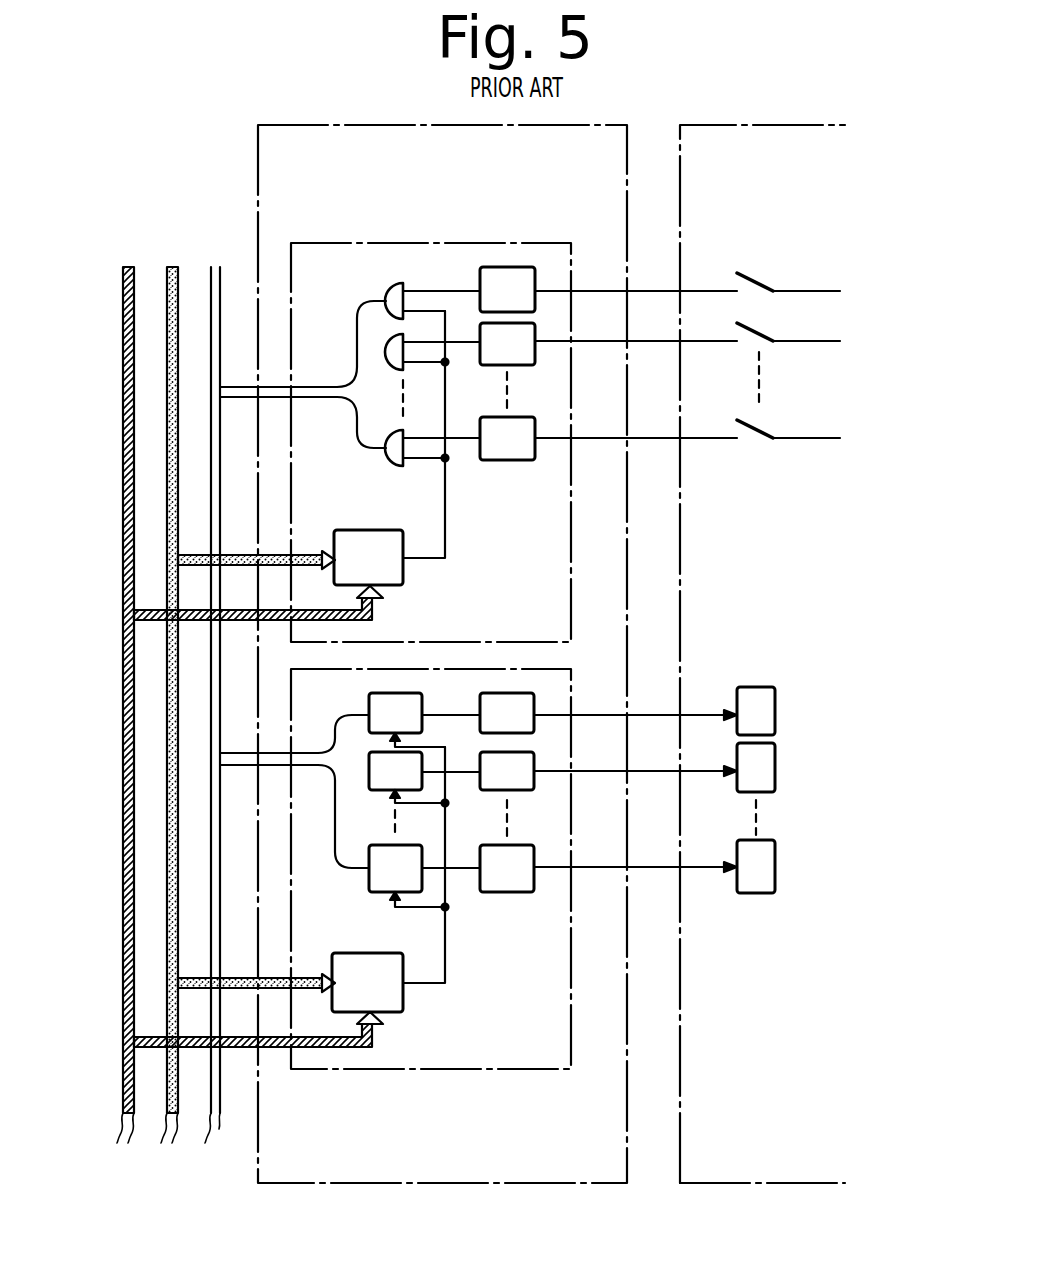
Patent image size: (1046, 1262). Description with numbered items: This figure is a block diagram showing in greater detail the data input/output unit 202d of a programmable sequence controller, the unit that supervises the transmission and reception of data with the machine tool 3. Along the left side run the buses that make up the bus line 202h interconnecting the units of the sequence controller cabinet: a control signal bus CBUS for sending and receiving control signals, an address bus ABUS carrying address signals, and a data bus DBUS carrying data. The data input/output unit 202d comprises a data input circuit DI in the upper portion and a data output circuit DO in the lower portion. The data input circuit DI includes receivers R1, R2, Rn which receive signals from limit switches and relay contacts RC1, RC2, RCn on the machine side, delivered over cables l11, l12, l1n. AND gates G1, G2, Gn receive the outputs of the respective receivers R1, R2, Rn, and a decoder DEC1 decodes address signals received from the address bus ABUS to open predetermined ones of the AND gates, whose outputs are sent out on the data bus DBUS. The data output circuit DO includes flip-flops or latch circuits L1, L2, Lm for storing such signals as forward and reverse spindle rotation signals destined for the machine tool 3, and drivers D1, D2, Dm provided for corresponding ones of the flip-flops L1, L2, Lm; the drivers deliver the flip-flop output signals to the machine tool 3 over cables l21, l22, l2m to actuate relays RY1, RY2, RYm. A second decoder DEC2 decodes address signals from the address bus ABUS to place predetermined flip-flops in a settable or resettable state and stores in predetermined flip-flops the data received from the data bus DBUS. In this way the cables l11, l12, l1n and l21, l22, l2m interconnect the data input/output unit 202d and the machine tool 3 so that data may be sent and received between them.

The data input/output unit 202d is at (393, 1184).
The machine tool 3 is at (746, 1184).
The bus line 202h is at (241, 226).
The control signal bus CBUS is at (215, 727).
The address bus ABUS is at (226, 731).
The data bus DBUS is at (287, 725).
The data input circuit DI is at (477, 241).
The data output circuit DO is at (430, 1069).
The decoder DEC1 is at (377, 528).
The decoder DEC2 is at (377, 951).
The AND gate G1 is at (411, 283).
The AND gate G2 is at (410, 322).
The AND gate Gn is at (410, 430).
The receiver R1 is at (608, 289).
The receiver R2 is at (608, 344).
The receiver Rn is at (608, 416).
The relay contact RC1 is at (788, 274).
The relay contact RC2 is at (788, 325).
The relay contact RCn is at (788, 395).
The cable l11 is at (652, 291).
The cable l12 is at (652, 341).
The cable l1n is at (652, 438).
The cable l21 is at (652, 713).
The cable l22 is at (652, 770).
The cable l2m is at (652, 866).
The flip-flop L1 is at (424, 720).
The flip-flop L2 is at (424, 779).
The flip-flop Lm is at (424, 860).
The driver D1 is at (608, 713).
The driver D2 is at (608, 771).
The driver Dm is at (608, 846).
The relay RY1 is at (768, 712).
The relay RY2 is at (768, 770).
The relay RYm is at (768, 867).